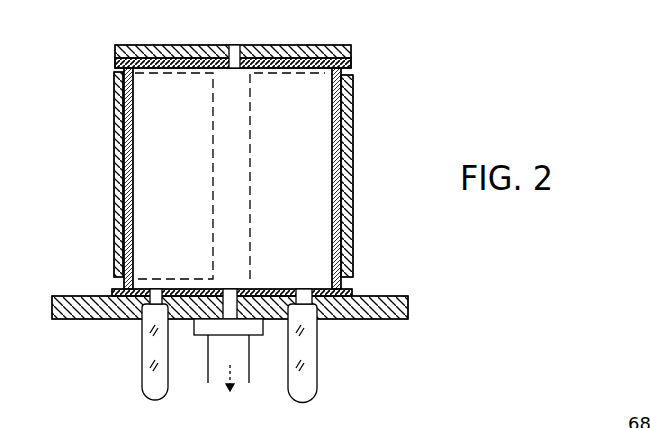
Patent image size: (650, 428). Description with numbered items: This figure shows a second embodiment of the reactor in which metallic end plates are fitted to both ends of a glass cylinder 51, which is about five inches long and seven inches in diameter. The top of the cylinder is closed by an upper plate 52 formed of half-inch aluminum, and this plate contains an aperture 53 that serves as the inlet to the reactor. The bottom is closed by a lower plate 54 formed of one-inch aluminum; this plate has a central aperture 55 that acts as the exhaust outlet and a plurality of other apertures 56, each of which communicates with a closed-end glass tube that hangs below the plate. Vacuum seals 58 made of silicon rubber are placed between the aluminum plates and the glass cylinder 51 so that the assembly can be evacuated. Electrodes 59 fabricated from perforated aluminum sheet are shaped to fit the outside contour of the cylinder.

The glass cylinder 51 is at (340, 167).
The upper plate 52 is at (324, 46).
The aperture 53 is at (234, 48).
The lower plate 54 is at (408, 308).
The central aperture 55 is at (230, 289).
The apertures 56 is at (158, 289).
The vacuum seals 58 is at (353, 66).
The electrodes 59 is at (113, 216).